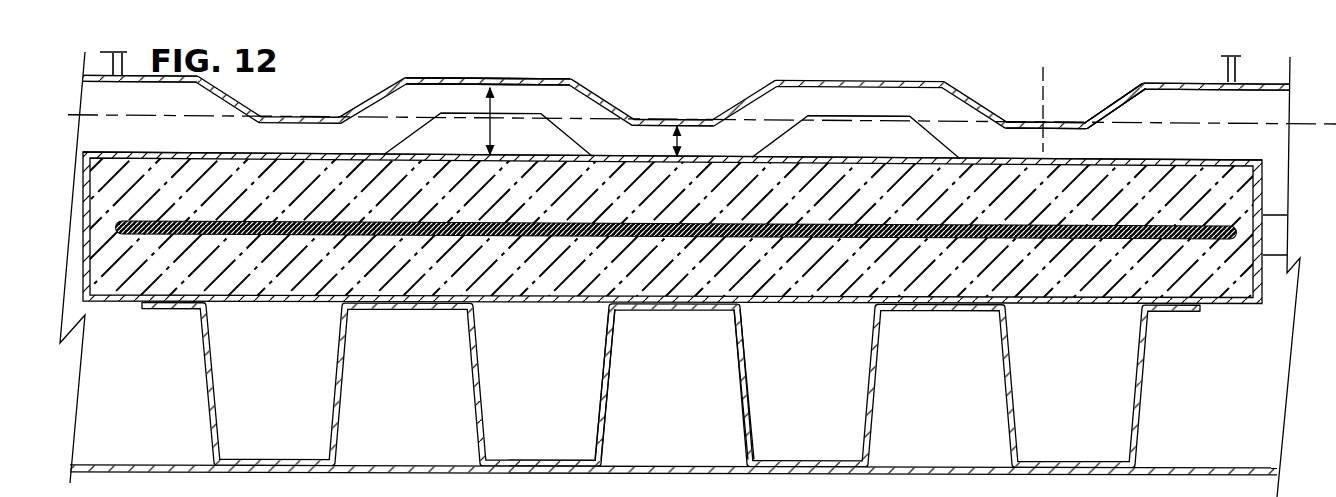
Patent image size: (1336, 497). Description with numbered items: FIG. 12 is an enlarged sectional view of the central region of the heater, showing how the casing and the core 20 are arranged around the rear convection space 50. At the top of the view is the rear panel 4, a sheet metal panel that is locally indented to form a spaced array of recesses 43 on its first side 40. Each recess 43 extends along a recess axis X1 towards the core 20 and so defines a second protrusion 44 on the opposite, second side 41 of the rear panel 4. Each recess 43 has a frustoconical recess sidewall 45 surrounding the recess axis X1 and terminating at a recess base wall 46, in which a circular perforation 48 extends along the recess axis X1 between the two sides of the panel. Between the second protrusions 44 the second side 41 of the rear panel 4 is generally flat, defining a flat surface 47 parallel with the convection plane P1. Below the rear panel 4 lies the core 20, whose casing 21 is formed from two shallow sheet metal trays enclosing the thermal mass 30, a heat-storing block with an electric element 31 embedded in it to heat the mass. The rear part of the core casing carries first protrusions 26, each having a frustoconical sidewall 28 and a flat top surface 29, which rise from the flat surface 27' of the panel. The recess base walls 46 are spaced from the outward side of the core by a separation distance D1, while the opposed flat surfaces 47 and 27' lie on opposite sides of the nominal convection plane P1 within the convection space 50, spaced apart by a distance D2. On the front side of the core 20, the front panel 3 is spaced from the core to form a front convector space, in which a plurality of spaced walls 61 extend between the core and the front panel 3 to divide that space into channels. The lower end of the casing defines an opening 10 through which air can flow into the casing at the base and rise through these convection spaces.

The front panel 3 is at (617, 472).
The rear panel 4 is at (637, 80).
The opening 10 is at (672, 385).
The core 20 is at (169, 338).
The casing 21 is at (1227, 321).
The first protrusions 26 is at (406, 132).
The flat surface 27' is at (672, 146).
The frustoconical sidewall 28 is at (936, 138).
The flat top surface 29 is at (838, 114).
The thermal mass 30 is at (668, 242).
The electric element 31 is at (1087, 237).
The first side 40 is at (702, 105).
The second side 41 is at (1193, 109).
The recesses 43 is at (321, 82).
The second protrusions 44 is at (1116, 111).
The recess sidewall 45 is at (1110, 106).
The recess base wall 46 is at (1067, 124).
The flat surface 47 is at (521, 88).
The perforation 48 is at (646, 122).
The convection space 50 is at (214, 144).
The walls 61 is at (612, 376).
The separation distance D1 is at (682, 140).
The distance D2 is at (491, 98).
The recess axis X1 is at (1045, 70).
The convection plane P1 is at (1297, 120).